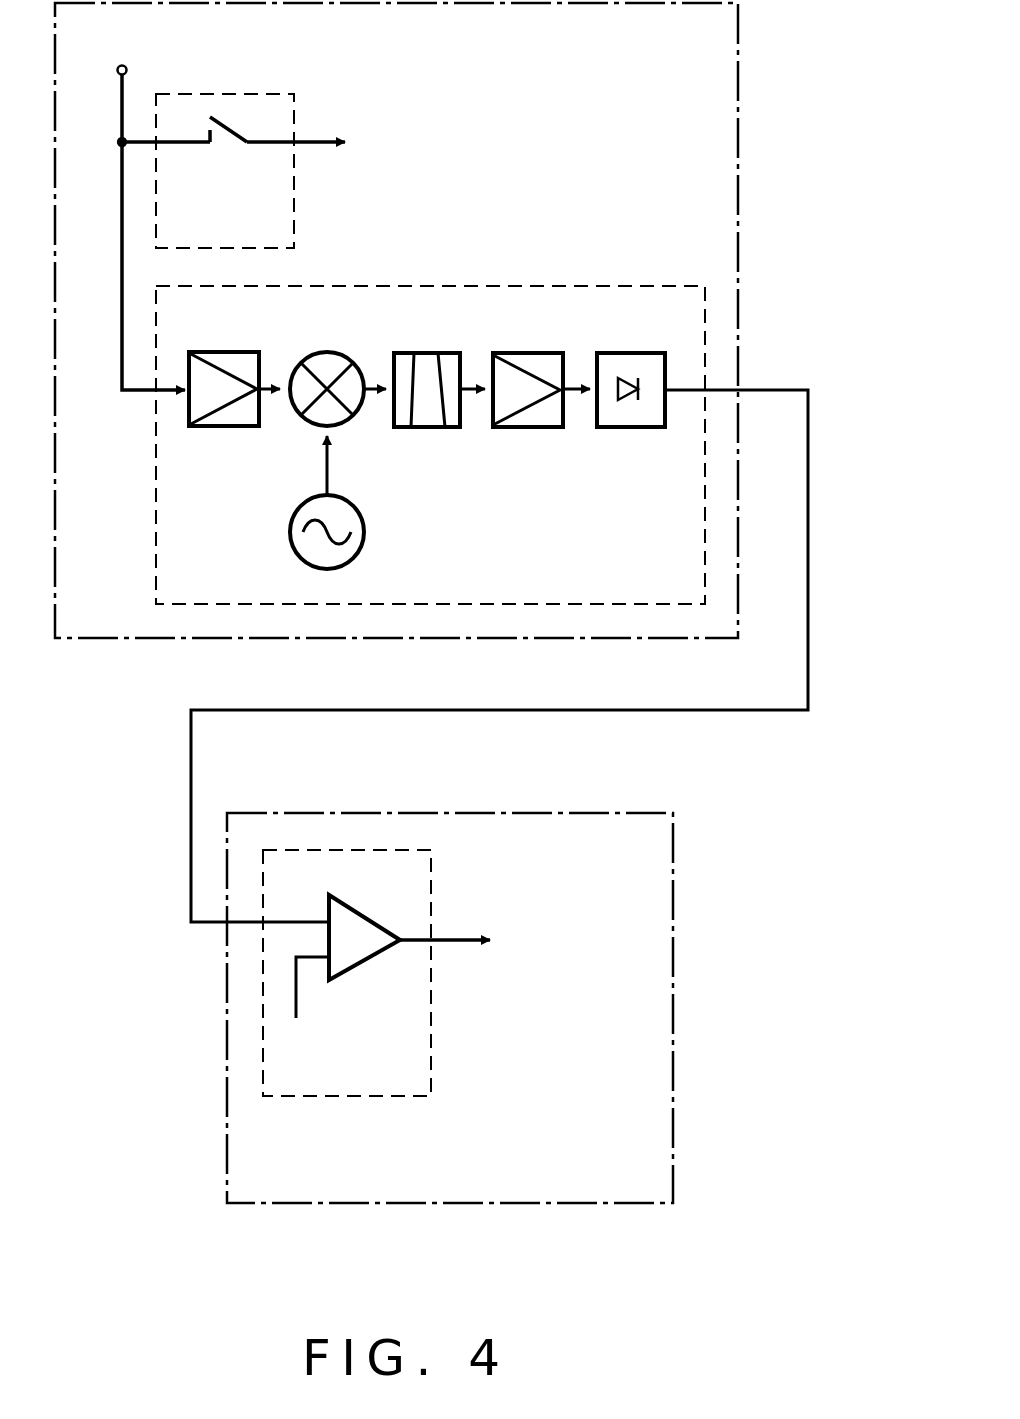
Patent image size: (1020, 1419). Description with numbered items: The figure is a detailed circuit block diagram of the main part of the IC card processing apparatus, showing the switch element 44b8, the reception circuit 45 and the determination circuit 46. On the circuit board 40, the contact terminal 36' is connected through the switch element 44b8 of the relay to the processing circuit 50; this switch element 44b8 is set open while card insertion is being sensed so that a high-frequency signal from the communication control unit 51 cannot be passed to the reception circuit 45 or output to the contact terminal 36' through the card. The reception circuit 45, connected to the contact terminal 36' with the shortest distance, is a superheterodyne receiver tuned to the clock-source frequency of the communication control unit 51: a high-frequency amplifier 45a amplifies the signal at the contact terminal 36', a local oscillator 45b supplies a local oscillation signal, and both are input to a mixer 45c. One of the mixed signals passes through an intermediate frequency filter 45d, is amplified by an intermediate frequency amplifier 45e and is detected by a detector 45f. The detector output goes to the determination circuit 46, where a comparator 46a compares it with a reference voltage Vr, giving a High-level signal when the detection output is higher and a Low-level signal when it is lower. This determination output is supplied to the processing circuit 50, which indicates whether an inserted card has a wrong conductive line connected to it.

The contact terminal 36' is at (141, 200).
The circuit board 40 is at (738, 118).
The switch element 44b8 is at (280, 94).
The processing circuit 50 is at (389, 542).
The reception circuit 45 is at (463, 286).
The high-frequency amplifier 45a is at (223, 352).
The local oscillator 45b is at (364, 524).
The mixer 45c is at (326, 352).
The intermediate frequency filter 45d is at (444, 352).
The intermediate frequency amplifier 45e is at (539, 352).
The detector 45f is at (636, 352).
The communication control unit 51 is at (578, 784).
The determination circuit 46 is at (431, 855).
The comparator 46a is at (370, 932).